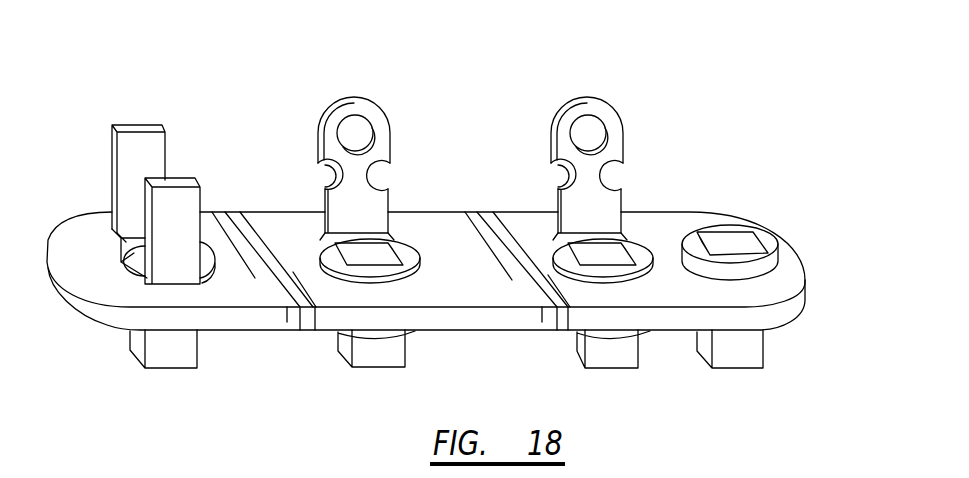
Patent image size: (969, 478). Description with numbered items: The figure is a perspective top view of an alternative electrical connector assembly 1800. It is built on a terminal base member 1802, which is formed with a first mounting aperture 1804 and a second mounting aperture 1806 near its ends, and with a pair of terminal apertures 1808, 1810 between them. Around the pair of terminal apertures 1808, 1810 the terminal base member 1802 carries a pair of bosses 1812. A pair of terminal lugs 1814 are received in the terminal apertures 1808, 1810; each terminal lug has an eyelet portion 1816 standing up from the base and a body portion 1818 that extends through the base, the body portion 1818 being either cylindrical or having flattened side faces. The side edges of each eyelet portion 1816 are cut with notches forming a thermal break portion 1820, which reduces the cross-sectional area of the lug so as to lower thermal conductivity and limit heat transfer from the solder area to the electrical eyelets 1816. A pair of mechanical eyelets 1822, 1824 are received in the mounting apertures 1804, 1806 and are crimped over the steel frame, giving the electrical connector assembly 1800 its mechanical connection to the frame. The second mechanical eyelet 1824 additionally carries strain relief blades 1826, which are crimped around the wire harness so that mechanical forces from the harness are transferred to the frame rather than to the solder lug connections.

The electrical connector assembly 1800 is at (675, 120).
The terminal base member 1802 is at (466, 230).
The first mounting aperture 1804 is at (120, 254).
The second mounting aperture 1806 is at (770, 245).
The terminal aperture 1808 is at (409, 252).
The terminal aperture 1810 is at (637, 255).
The bosses 1812 is at (415, 340).
The terminal lugs 1814 is at (370, 88).
The eyelet portion 1816 is at (317, 112).
The body portion 1818 is at (365, 367).
The thermal break portion 1820 is at (328, 181).
The mechanical eyelet 1822 is at (730, 368).
The second mechanical eyelet 1824 is at (182, 368).
The strain relief blades 1826 is at (178, 172).